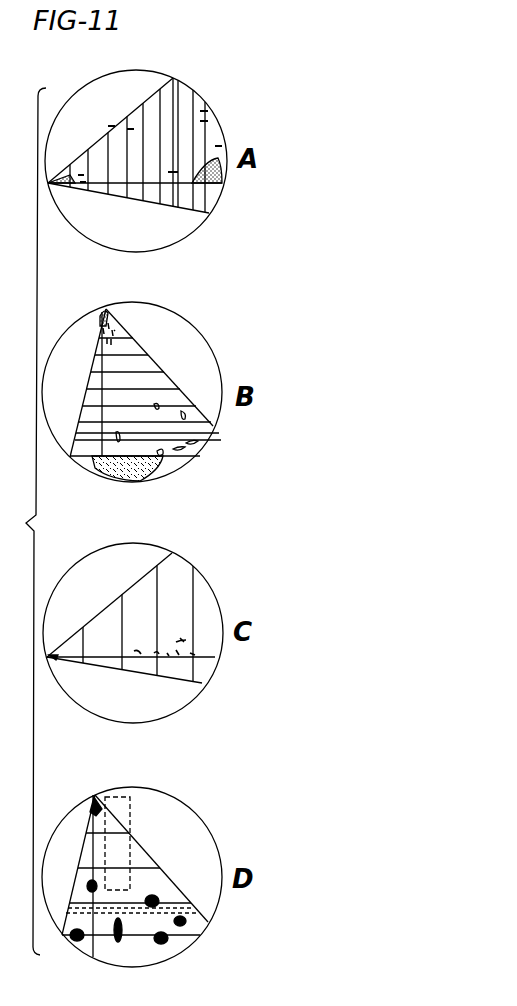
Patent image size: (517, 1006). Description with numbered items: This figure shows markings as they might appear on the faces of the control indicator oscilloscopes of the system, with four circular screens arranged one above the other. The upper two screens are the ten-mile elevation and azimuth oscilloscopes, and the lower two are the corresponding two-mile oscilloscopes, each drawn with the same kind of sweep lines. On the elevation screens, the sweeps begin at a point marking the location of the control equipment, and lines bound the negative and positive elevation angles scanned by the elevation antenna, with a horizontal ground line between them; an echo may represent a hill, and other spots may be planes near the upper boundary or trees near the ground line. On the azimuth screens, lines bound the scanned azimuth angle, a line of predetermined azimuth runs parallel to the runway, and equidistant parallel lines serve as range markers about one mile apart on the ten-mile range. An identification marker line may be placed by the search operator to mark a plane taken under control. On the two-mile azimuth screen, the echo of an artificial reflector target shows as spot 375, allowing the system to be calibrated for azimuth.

The spot 375 is at (86, 886).